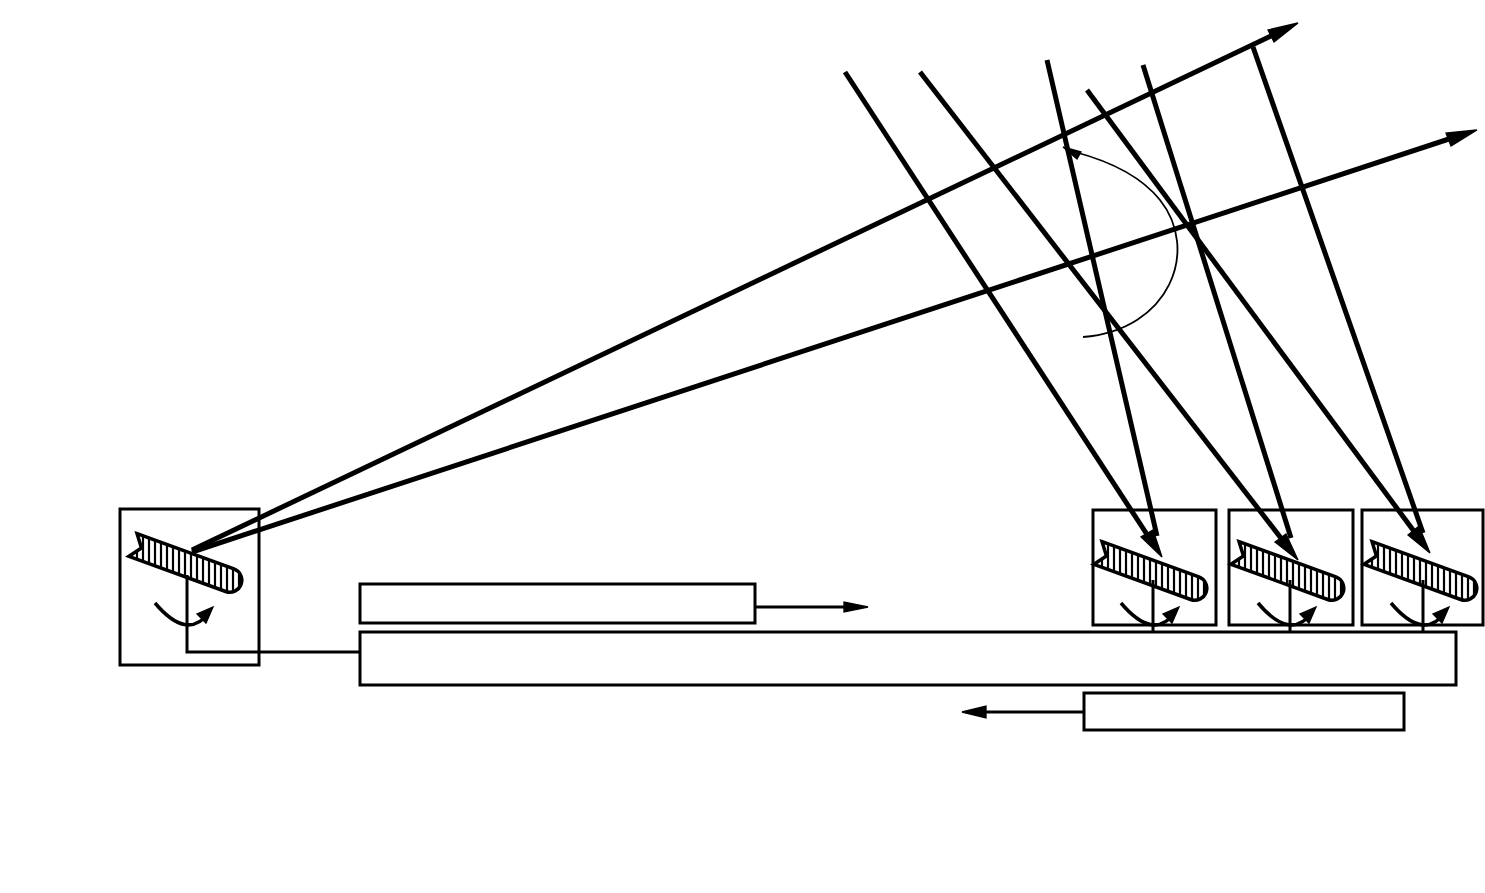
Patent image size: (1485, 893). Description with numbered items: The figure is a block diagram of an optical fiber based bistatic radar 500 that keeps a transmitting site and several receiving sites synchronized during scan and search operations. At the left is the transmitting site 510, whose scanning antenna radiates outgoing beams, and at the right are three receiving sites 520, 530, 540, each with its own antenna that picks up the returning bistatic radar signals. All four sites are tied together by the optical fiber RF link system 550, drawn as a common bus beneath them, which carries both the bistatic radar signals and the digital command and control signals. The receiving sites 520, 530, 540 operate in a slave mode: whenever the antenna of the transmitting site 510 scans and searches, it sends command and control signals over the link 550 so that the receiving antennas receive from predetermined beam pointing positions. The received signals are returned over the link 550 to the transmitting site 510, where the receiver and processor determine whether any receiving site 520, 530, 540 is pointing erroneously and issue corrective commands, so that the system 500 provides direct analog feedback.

The optical fiber based bistatic radar 500 is at (762, 768).
The transmitting site 510 is at (240, 570).
The receiving site 520 is at (1154, 553).
The receiving site 530 is at (1291, 553).
The receiving site 540 is at (1422, 553).
The optical fiber RF link system 550 is at (908, 641).